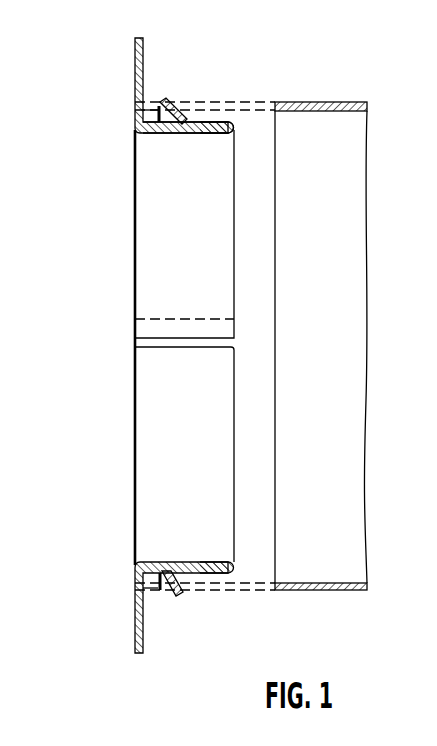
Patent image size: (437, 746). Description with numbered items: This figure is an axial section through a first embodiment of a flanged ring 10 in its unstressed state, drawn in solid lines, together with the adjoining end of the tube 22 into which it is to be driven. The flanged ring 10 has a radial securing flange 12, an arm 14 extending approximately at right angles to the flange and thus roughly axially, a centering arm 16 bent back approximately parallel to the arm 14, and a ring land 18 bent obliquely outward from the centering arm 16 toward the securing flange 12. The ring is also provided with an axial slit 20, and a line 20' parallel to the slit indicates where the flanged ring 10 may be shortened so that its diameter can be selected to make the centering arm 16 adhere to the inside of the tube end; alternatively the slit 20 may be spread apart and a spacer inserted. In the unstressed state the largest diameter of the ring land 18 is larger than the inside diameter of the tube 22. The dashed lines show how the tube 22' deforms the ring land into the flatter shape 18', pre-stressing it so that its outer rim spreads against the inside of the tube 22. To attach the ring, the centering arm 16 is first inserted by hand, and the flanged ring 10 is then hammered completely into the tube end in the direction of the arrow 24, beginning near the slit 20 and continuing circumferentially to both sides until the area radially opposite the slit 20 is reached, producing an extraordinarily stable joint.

The flanged ring 10 is at (125, 229).
The radial securing flange 12 is at (135, 76).
The arm 14 is at (181, 136).
The centering arm 16 is at (208, 118).
The ring land 18 is at (186, 315).
The deformed ring land 18' is at (126, 341).
The axial slit 20 is at (152, 237).
The shortening line 20' is at (163, 300).
The tube 22 is at (321, 315).
The tube in deforming position 22' is at (205, 311).
The arrow 24 is at (170, 437).